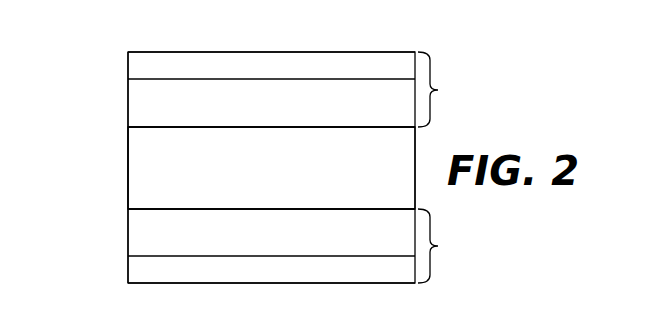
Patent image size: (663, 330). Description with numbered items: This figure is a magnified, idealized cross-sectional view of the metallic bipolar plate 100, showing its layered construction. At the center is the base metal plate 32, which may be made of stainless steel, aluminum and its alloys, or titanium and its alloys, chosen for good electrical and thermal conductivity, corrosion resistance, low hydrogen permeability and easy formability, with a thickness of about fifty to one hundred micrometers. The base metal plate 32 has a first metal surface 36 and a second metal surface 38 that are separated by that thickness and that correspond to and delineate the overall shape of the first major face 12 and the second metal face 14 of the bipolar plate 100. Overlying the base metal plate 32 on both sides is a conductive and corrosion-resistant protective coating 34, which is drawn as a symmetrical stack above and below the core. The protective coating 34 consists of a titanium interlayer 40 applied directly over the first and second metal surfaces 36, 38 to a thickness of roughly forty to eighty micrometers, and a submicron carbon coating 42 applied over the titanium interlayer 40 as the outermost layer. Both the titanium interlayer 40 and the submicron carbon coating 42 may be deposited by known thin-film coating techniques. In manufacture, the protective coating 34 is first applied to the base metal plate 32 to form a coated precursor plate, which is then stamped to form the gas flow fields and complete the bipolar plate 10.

The bipolar plate 10 is at (108, 72).
The bipolar plate 100 is at (123, 97).
The first major face 12 is at (334, 52).
The second metal face 14 is at (306, 283).
The base metal plate 32 is at (217, 177).
The conductive and corrosion-resistant protective coating 34 is at (441, 167).
The first metal surface 36 is at (285, 127).
The second metal surface 38 is at (262, 210).
The titanium interlayer 40 is at (216, 114).
The submicron carbon coating 42 is at (216, 77).